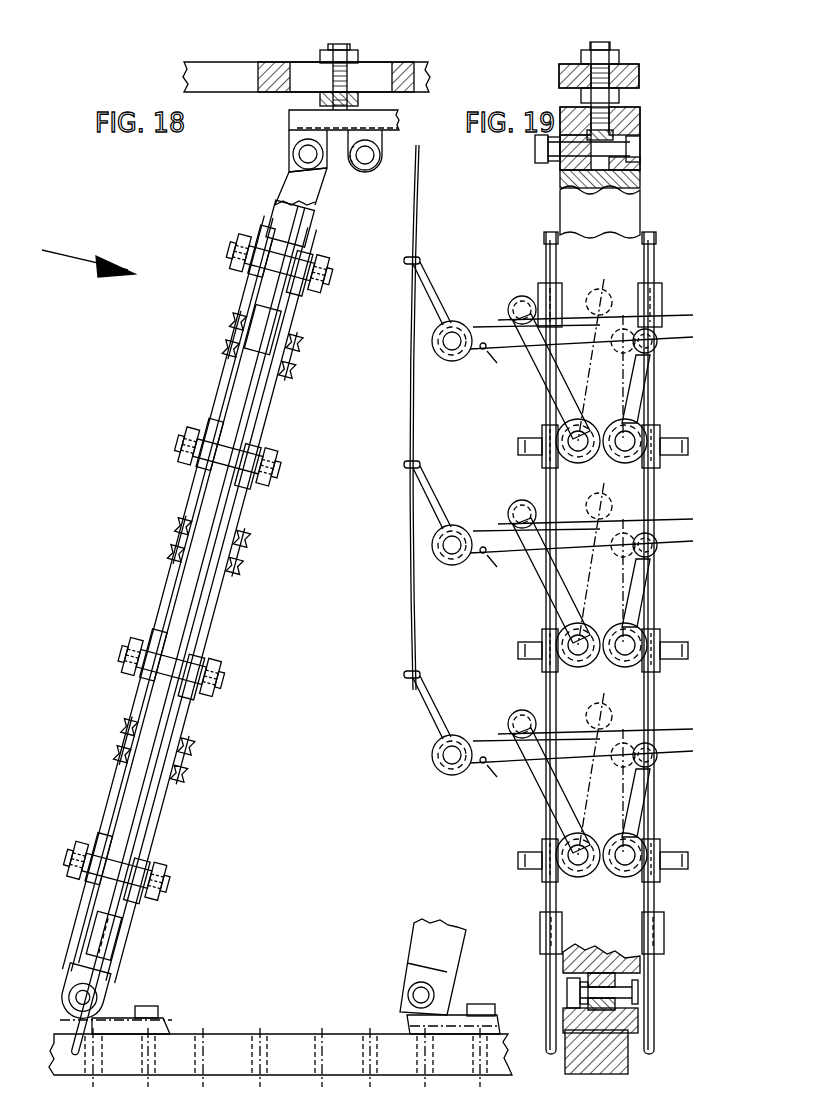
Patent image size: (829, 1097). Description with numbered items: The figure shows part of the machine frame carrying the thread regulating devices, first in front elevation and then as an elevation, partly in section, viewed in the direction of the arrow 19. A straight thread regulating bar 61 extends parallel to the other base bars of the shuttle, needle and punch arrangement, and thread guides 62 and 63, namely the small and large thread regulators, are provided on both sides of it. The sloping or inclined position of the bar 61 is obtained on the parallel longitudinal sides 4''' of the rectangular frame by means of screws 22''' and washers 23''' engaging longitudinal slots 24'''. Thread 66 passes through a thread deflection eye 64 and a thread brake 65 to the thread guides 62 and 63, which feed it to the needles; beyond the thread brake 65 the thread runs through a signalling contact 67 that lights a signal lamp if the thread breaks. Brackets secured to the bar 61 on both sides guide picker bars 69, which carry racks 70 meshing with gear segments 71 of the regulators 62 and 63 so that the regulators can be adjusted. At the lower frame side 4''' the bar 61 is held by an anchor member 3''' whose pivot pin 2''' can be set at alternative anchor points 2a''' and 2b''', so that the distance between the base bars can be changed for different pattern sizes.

In FIG. 18, the longitudinal frame side 4''' is at (280, 554).
In FIG. 19, the longitudinal frame side 4''' is at (572, 549).
In FIG. 18, the longitudinal slot 24''' is at (336, 56).
In FIG. 18, the screw 22''' is at (363, 63).
In FIG. 19, the screw 22''' is at (637, 73).
In FIG. 18, the washer 23''' is at (380, 102).
In FIG. 18, the anchor member 3''' is at (280, 572).
In FIG. 18, the pivot pin 2''' is at (282, 151).
In FIG. 19, the pivot pin 2''' is at (570, 558).
In FIG. 18, the anchor point 2a''' is at (273, 590).
In FIG. 18, the anchor point 2b''' is at (470, 970).
In FIG. 18, the thread regulating bar 61 is at (318, 192).
In FIG. 19, the thread regulating bar 61 is at (570, 202).
In FIG. 18, the thread guide 62 is at (222, 397).
In FIG. 19, the thread guide 62 is at (643, 372).
In FIG. 18, the thread guide 63 is at (227, 330).
In FIG. 19, the thread guide 63 is at (553, 382).
In FIG. 19, the thread deflection eye 64 is at (405, 260).
In FIG. 19, the thread brake 65 is at (443, 348).
In FIG. 19, the thread 66 is at (427, 310).
In FIG. 19, the signalling contact 67 is at (487, 360).
In FIG. 19, the picker bar 69 is at (542, 247).
In FIG. 19, the rack 70 is at (542, 668).
In FIG. 19, the gear segment 71 is at (578, 670).
In FIG. 18, the arrow 19 is at (75, 257).